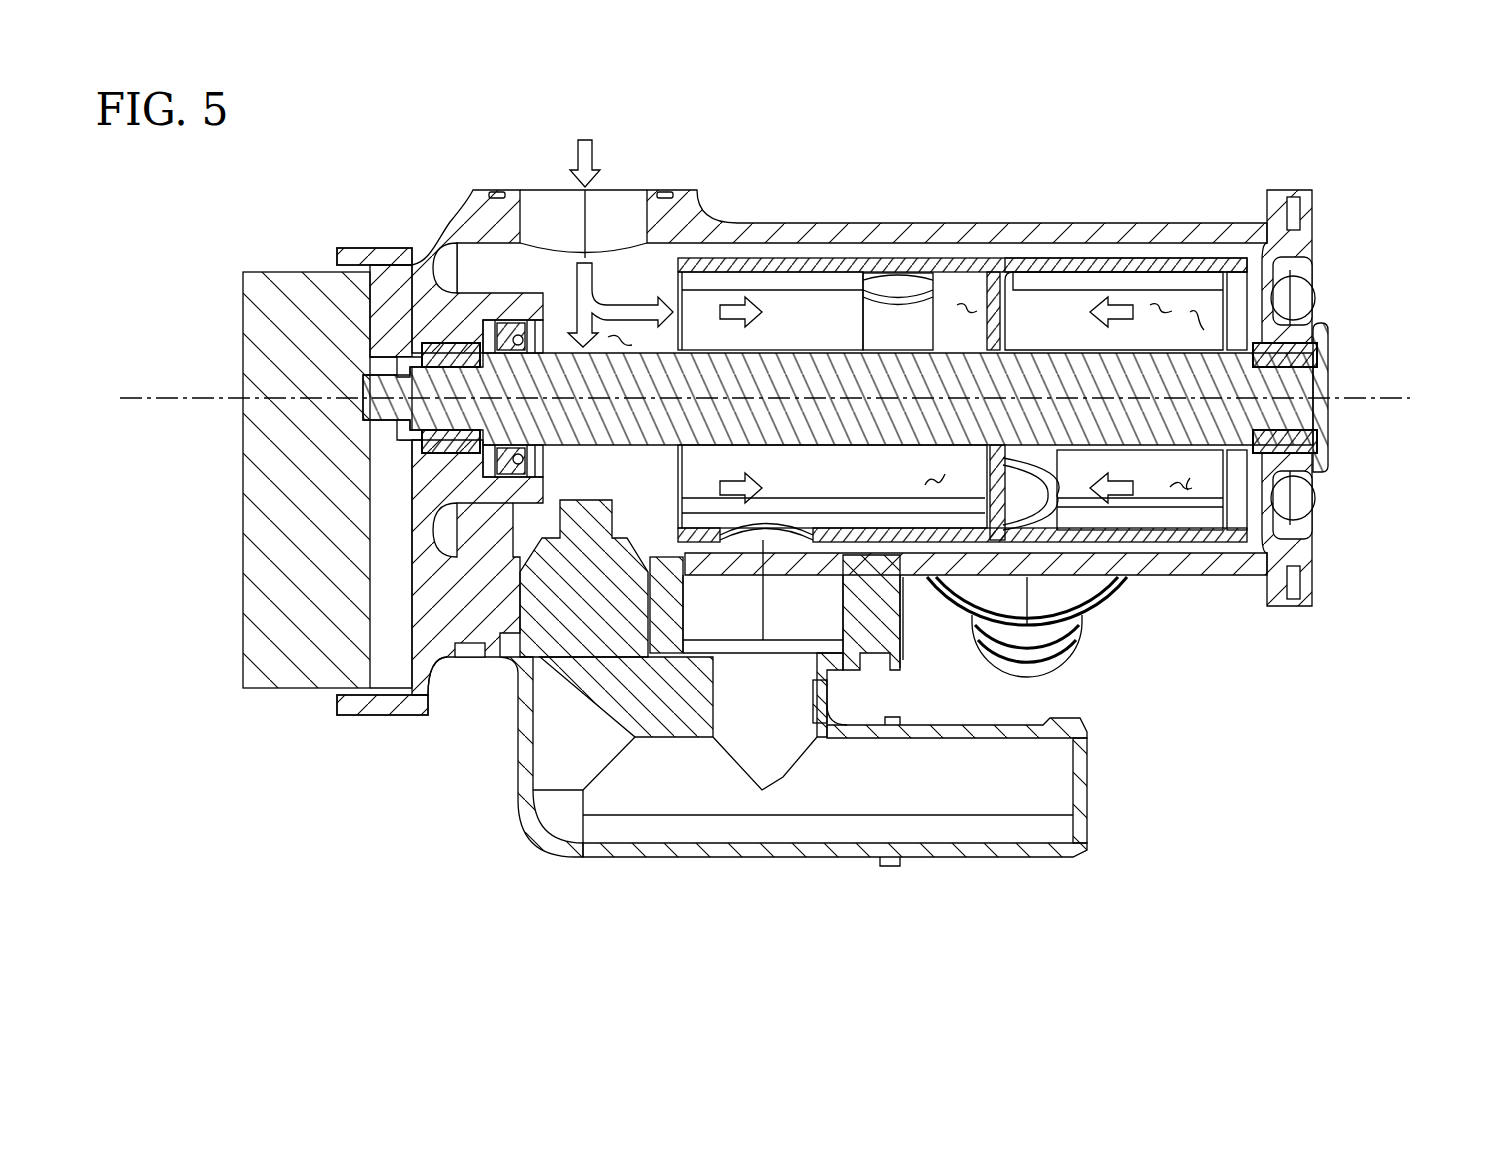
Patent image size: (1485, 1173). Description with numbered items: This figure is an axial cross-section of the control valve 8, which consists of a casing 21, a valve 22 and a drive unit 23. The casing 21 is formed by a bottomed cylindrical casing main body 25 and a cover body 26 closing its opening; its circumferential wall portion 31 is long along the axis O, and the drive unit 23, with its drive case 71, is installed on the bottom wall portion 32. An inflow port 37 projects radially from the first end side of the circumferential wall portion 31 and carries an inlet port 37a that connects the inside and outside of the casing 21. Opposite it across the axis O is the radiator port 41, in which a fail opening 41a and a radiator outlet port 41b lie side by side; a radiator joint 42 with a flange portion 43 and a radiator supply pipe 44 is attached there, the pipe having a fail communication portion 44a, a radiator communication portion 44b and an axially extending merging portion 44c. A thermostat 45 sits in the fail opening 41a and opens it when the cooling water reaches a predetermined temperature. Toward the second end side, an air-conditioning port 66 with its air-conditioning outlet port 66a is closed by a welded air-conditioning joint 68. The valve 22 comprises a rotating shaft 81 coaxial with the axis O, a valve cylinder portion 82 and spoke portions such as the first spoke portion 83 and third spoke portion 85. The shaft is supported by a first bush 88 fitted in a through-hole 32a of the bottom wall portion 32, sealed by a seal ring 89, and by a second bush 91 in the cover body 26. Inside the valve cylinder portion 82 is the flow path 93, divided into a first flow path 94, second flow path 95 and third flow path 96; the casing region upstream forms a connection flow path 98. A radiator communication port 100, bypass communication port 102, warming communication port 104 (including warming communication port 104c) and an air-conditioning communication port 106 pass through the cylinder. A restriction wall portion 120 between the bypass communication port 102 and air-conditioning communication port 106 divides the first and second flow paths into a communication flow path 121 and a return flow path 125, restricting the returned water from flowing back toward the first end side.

The control valve 8 is at (1268, 132).
The casing 21 is at (1368, 375).
The valve 22 is at (828, 258).
The drive unit 23 is at (240, 640).
The casing main body 25 is at (1280, 192).
The cover body 26 is at (1315, 207).
The circumferential wall portion 31 is at (737, 222).
The bottom wall portion 32 is at (417, 327).
The through-hole 32a is at (403, 385).
The inflow port 37 is at (470, 196).
The inlet port 37a is at (528, 240).
The radiator port 41 is at (900, 622).
The fail opening 41a is at (570, 722).
The radiator outlet port 41b is at (745, 660).
The radiator joint 42 is at (794, 813).
The flange portion 43 is at (460, 675).
The radiator supply pipe 44 is at (774, 809).
The fail communication portion 44a is at (517, 750).
The radiator communication portion 44b is at (830, 700).
The merging portion 44c is at (950, 858).
The thermostat 45 is at (602, 740).
The air-conditioning port 66 is at (1048, 653).
The air-conditioning outlet port 66a is at (1047, 507).
The air-conditioning joint 68 is at (1047, 668).
The drive case 71 is at (240, 563).
The rotating shaft 81 is at (1290, 413).
The valve cylinder portion 82 is at (1090, 262).
The first spoke portion 83 is at (785, 305).
The third spoke portion 85 is at (1183, 483).
The first bush 88 is at (462, 352).
The seal ring 89 is at (513, 477).
The second bush 91 is at (1308, 356).
The flow path 93 is at (1218, 469).
The first flow path 94 is at (1162, 469).
The second flow path 95 is at (997, 492).
The third flow path 96 is at (1200, 325).
The connection flow path 98 is at (624, 335).
The radiator communication port 100 is at (800, 542).
The bypass communication port 102 is at (900, 283).
The warming communication port 104 is at (1204, 577).
The warming communication port 104c is at (1153, 487).
The air-conditioning communication port 106 is at (1015, 520).
The restriction wall portion 120 is at (1012, 293).
The communication flow path 121 is at (1000, 752).
The return flow path 125 is at (1345, 550).
The axis O is at (185, 397).